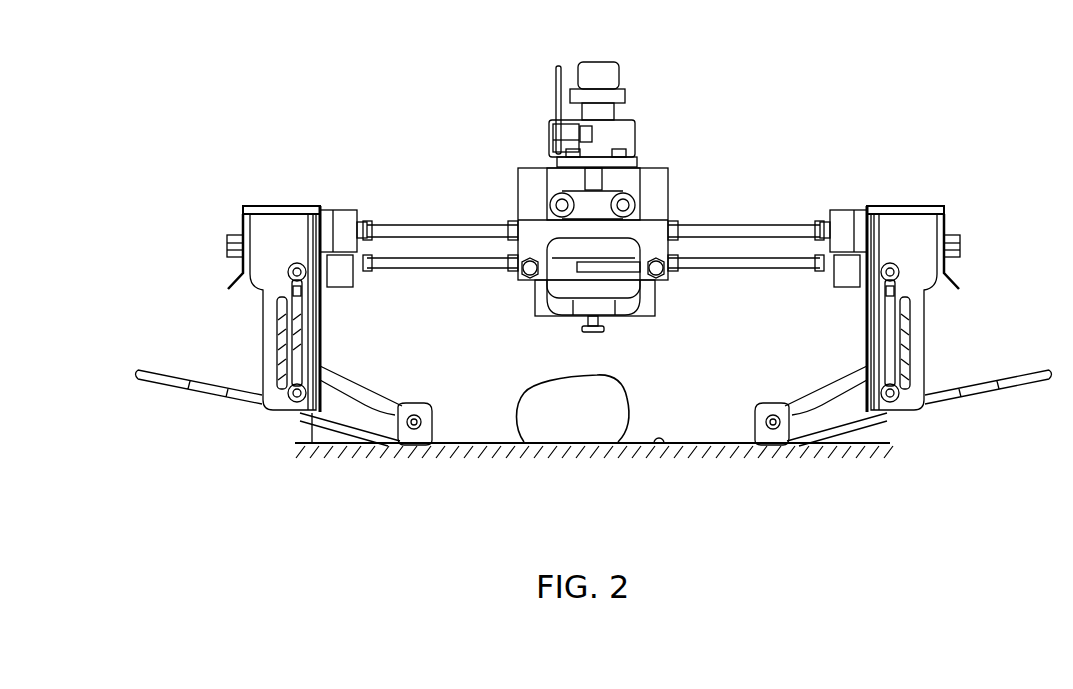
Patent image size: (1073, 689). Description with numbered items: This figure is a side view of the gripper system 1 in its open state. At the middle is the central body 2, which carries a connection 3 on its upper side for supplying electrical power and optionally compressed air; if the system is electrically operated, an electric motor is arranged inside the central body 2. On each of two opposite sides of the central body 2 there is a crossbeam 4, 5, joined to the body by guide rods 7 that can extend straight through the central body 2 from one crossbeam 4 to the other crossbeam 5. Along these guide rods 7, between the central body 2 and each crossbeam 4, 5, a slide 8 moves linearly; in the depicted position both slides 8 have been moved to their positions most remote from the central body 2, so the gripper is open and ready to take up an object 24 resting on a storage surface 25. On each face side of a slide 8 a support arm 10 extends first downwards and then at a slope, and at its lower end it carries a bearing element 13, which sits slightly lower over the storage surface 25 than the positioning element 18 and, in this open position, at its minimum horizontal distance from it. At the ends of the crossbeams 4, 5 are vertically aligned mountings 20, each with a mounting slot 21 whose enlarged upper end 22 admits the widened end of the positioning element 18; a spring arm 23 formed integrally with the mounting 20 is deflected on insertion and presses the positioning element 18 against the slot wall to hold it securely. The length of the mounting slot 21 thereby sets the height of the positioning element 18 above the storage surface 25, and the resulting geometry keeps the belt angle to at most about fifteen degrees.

The gripper system 1 is at (220, 91).
The central body 2 is at (670, 183).
The connection 3 is at (612, 75).
The crossbeam 4 is at (258, 218).
The crossbeam 5 is at (922, 218).
The guide rods 7 is at (770, 230).
The slide 8 is at (340, 212).
The support arm 10 is at (364, 395).
The bearing element 13 is at (416, 446).
The positioning element 18 is at (292, 403).
The mounting 20 is at (310, 308).
The mounting slot 21 is at (302, 336).
The upper end 22 is at (286, 278).
The spring arm 23 is at (279, 362).
The object 24 is at (622, 396).
The storage surface 25 is at (660, 446).